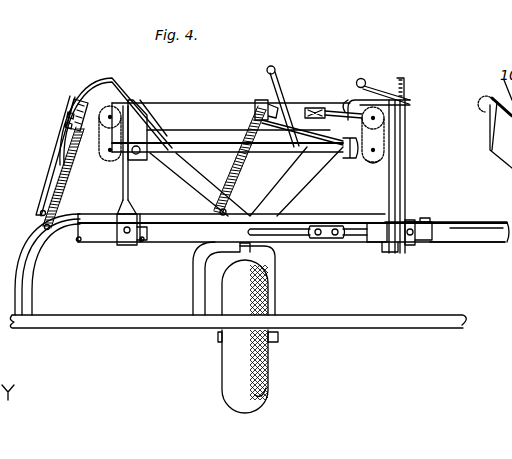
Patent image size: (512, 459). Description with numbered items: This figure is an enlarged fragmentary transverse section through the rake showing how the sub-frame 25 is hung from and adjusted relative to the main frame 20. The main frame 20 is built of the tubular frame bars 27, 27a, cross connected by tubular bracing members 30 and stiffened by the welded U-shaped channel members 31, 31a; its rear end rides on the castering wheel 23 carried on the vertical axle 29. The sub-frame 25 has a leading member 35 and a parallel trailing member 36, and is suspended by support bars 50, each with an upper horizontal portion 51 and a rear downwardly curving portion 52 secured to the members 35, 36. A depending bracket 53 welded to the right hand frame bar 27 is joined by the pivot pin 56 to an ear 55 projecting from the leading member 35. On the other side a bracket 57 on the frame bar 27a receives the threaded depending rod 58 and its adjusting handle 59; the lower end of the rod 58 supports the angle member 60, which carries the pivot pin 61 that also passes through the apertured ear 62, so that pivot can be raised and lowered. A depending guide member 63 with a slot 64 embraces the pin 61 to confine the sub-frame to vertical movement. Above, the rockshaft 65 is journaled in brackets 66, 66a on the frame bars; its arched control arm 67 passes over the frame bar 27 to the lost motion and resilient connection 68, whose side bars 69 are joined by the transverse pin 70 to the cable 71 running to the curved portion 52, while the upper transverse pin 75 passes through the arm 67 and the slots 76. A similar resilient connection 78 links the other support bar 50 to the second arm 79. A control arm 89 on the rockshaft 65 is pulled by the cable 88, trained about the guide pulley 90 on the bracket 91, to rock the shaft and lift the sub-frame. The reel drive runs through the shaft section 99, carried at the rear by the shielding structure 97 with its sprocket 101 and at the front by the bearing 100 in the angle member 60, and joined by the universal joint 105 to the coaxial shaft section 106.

The main frame 20 is at (371, 166).
The castering wheel 23 is at (268, 368).
The sub-frame 25 is at (96, 248).
The tubular frame bar 27 is at (100, 158).
The tubular frame bar 27a is at (385, 140).
The axle 29 is at (276, 293).
The bracing member 30 is at (207, 112).
The U-shaped channel member 31 is at (110, 162).
The U-shaped channel member 31a is at (388, 171).
The leading member 35 is at (468, 222).
The trailing member 36 is at (122, 328).
The support bar 50 is at (174, 210).
The upper horizontal portion 51 is at (150, 216).
The downwardly curving portion 52 is at (32, 298).
The depending bracket 53 is at (122, 196).
The ear 55 is at (143, 241).
The pivot pin 56 is at (127, 238).
The bracket 57 is at (406, 108).
The depending rod 58 is at (406, 127).
The adjusting handle 59 is at (380, 81).
The angle member 60 is at (414, 222).
The pivot pin 61 is at (380, 246).
The apertured ear 62 is at (370, 243).
The depending member 63 is at (389, 160).
The slot 64 is at (391, 255).
The rockshaft 65 is at (180, 148).
The bracket 66 is at (148, 118).
The bracket 66a is at (343, 110).
The arched control arm 67 is at (107, 80).
The lost motion and resilient connection 68 is at (53, 158).
The side bars 69 is at (72, 106).
The transverse pin 70 is at (40, 212).
The cable 71 is at (44, 227).
The transverse pin 75 is at (65, 128).
The slots 76 is at (67, 117).
The resilient connection 78 is at (250, 168).
The arm 79 is at (266, 100).
The cable 88 is at (283, 84).
The control arm 89 is at (270, 75).
The guide pulley 90 is at (313, 107).
The bracket 91 is at (336, 111).
The shielding and supporting structure 97 is at (503, 166).
The shaft section 99 is at (450, 233).
The bearing 100 is at (408, 246).
The driving sprocket 101 is at (478, 104).
The universal joint 105 is at (320, 252).
The shaft section 106 is at (280, 237).